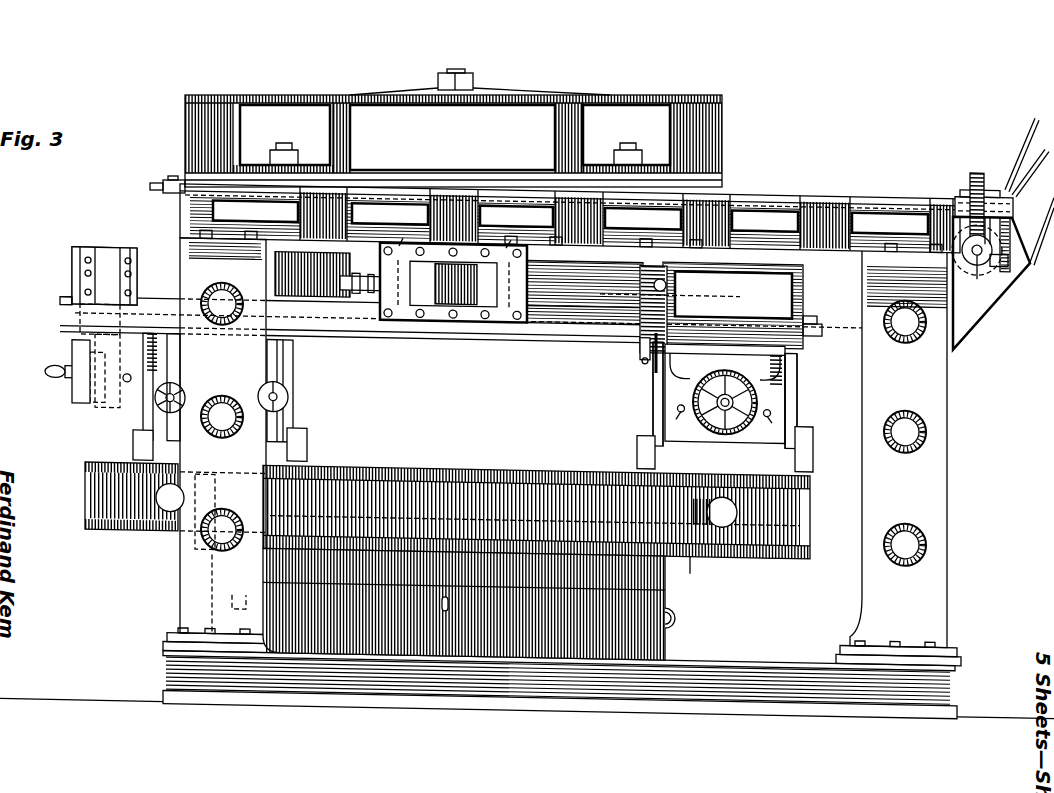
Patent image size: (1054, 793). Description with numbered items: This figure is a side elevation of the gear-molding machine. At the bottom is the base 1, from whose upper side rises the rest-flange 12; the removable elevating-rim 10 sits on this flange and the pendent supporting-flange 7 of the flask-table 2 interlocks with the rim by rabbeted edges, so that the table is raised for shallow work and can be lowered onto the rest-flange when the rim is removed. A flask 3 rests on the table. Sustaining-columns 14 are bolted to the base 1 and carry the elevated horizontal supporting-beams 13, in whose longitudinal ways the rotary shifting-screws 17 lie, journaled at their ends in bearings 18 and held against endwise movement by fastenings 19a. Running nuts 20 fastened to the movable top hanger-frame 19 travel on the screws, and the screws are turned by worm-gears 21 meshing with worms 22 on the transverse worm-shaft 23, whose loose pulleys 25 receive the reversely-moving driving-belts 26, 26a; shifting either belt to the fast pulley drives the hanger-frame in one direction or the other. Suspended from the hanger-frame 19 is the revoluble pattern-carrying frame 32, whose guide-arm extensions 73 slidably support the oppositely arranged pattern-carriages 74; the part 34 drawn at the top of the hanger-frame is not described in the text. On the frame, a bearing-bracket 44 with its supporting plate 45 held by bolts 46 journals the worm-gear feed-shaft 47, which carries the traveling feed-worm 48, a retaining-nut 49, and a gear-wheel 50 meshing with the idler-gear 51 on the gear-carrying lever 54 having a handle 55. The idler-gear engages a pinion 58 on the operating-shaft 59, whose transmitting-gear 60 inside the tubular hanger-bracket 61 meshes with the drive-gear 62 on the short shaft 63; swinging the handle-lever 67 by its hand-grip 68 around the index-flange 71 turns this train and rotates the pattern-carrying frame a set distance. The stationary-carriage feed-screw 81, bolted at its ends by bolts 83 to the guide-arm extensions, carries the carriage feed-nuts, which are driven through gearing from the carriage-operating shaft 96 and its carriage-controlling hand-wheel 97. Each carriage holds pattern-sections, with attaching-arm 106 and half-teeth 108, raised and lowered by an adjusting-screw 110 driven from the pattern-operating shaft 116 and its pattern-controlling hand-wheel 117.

The base 1 is at (185, 682).
The flask-table 2 is at (690, 565).
The flask 3 is at (88, 504).
The pendent supporting-flange 7 is at (668, 574).
The removable elevating-rim 10 is at (666, 598).
The rest-flange 12 is at (668, 648).
The elevated horizontal supporting-beams 13 is at (808, 178).
The sustaining-columns 14 is at (182, 570).
The rotary longitudinal shifting-screws 17 is at (160, 186).
The bearings 18 is at (956, 192).
The movable top hanger-frame 19 is at (453, 141).
The fastenings 19a is at (175, 178).
The running nuts 20 is at (283, 165).
The worm-gears 21 is at (970, 170).
The worms 22 is at (962, 236).
The transverse worm-shaft 23 is at (977, 256).
The loose pulleys 25 is at (950, 270).
The driving-belt 26 is at (1022, 130).
The driving-belt 26a is at (1020, 160).
The revoluble pattern-carrying frame 32 is at (598, 345).
The nut 34 is at (470, 66).
The bearing-bracket 44 is at (453, 236).
The supporting plate 45 is at (500, 322).
The bolts 46 is at (408, 325).
The worm-gear feed-shaft 47 is at (332, 320).
The traveling feed-worm 48 is at (440, 310).
The retaining-nut 49 is at (378, 322).
The gear-wheel 50 is at (668, 282).
The idler-gear 51 is at (672, 295).
The gear-carrying lever 54 is at (642, 273).
The handle 55 is at (640, 350).
The pinion 58 is at (655, 368).
The operating-shaft 59 is at (555, 342).
The transmitting-gear 60 is at (80, 330).
The tubular hanger-bracket 61 is at (118, 410).
The drive-gear 62 is at (99, 410).
The short shaft 63 is at (129, 380).
The handle-lever 67 is at (68, 374).
The hand-grip 68 is at (52, 386).
The index-flange 71 is at (74, 404).
The guide-arm extensions 73 is at (437, 298).
The pattern-carriages 74 is at (290, 392).
The stationary-carriage feed-screw 81 is at (60, 309).
The bolts 83 is at (72, 296).
The carriage-operating shaft 96 is at (735, 385).
The carriage-controlling hand-wheel 97 is at (724, 410).
The attaching-arm 106 is at (798, 382).
The half-teeth 108 is at (814, 450).
The adjusting-screw 110 is at (785, 356).
The pattern-operating shaft 116 is at (726, 422).
The pattern-controlling hand-wheel 117 is at (180, 390).